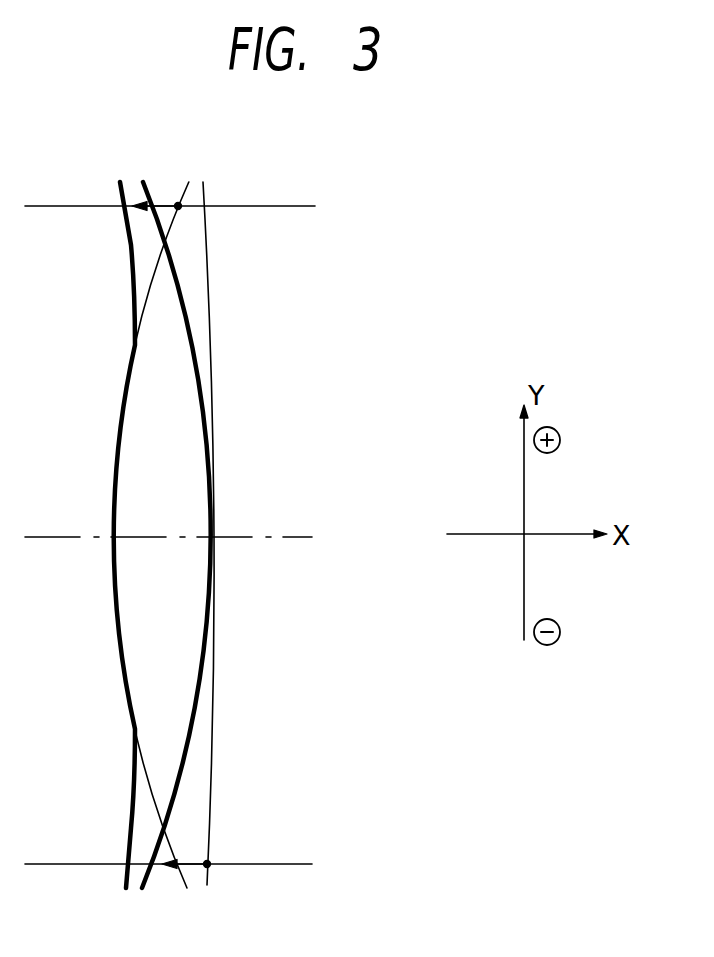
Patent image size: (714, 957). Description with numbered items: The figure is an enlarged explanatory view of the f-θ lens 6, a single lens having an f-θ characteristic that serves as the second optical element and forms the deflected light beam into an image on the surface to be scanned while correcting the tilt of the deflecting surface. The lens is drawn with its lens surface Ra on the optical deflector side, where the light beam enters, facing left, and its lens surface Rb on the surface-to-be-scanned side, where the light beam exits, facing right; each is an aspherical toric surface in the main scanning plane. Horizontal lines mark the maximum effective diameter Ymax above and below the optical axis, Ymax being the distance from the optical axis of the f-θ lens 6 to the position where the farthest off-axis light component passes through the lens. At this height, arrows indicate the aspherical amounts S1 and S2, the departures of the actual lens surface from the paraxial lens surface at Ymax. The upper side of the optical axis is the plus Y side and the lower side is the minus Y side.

The f-θ lens 6 is at (197, 498).
The lens surface on the optical deflector side Ra is at (133, 800).
The lens surface on the surface-to-be-scanned side Rb is at (190, 772).
The aspherical amount S1 is at (160, 203).
The aspherical amount S2 is at (195, 868).
The maximum effective diameter Ymax is at (204, 533).